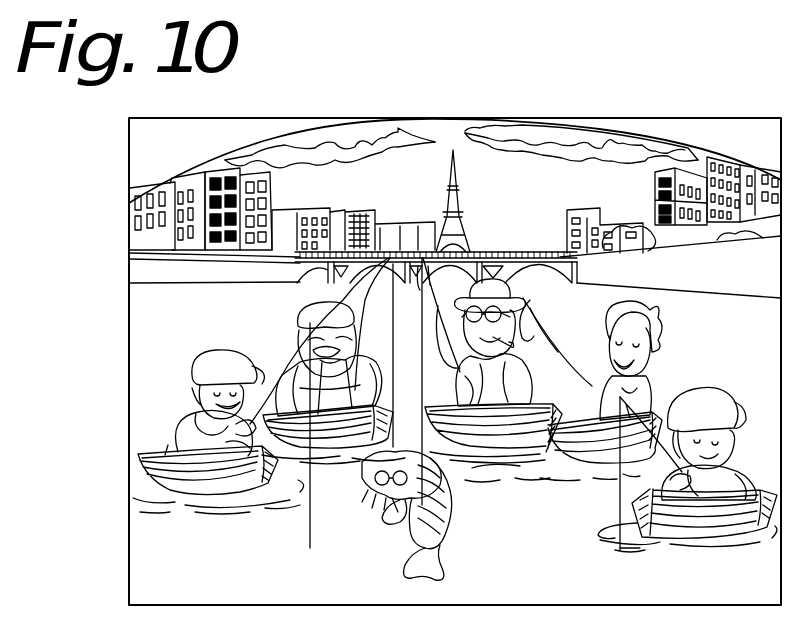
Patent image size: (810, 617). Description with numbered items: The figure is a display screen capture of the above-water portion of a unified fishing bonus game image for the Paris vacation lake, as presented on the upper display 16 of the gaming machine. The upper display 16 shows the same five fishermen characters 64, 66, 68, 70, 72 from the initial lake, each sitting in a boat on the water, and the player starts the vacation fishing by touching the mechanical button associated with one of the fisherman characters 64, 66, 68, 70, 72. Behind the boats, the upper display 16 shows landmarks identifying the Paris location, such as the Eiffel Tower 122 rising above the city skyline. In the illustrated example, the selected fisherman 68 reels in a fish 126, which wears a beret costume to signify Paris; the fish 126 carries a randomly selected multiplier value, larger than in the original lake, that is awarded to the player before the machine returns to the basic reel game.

The upper display 16 is at (129, 390).
The fisherman character 64 is at (207, 368).
The fisherman character 66 is at (312, 300).
The fisherman character 68 is at (520, 290).
The fisherman character 70 is at (665, 345).
The fisherman character 72 is at (700, 398).
The Eiffel Tower 122 is at (462, 195).
The fish 126 is at (455, 515).